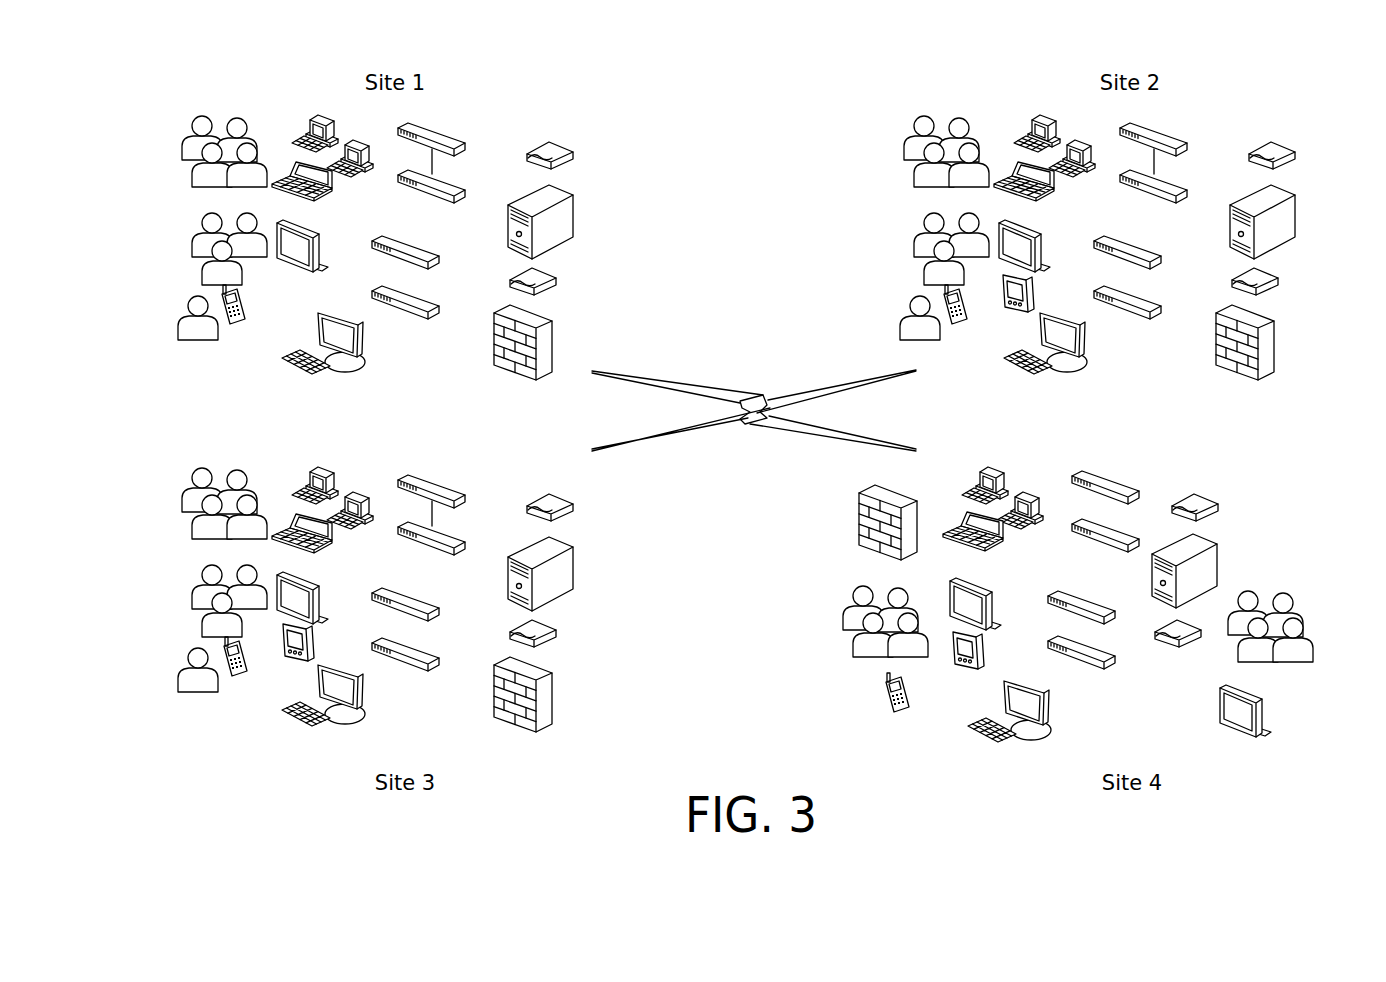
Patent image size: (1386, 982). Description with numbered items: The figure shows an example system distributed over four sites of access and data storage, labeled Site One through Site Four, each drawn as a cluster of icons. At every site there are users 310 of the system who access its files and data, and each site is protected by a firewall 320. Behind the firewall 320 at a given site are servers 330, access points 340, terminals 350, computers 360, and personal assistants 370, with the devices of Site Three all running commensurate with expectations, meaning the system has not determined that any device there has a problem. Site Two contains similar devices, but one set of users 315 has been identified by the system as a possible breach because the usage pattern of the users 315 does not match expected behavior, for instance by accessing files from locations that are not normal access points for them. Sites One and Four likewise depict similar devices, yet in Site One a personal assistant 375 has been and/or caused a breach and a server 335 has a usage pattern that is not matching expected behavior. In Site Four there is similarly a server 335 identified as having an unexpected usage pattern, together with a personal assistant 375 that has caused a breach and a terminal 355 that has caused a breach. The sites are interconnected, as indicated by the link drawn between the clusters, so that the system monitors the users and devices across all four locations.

The users 310 is at (177, 117).
The users 315 is at (922, 113).
The firewall 320 is at (550, 350).
The server 330 is at (560, 213).
The server 335 is at (555, 250).
The access point 340 is at (422, 320).
The terminal 350 is at (347, 367).
The terminal 355 is at (990, 603).
The computer 360 is at (313, 118).
The personal assistant 370 is at (233, 330).
The personal assistant 375 is at (178, 322).